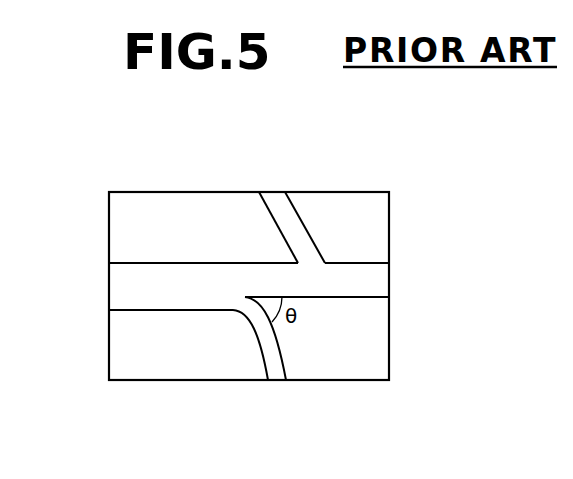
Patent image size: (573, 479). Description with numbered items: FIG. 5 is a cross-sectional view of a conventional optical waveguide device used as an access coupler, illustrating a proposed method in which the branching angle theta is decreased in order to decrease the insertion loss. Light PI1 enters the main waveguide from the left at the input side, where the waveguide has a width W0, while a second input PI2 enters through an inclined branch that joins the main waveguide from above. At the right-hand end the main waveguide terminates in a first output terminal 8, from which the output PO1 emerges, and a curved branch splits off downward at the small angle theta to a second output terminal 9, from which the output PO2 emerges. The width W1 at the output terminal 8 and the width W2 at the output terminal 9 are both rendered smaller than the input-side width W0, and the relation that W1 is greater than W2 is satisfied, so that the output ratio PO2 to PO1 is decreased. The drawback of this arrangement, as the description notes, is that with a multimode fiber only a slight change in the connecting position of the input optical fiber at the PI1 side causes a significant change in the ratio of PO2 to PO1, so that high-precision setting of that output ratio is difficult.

The output terminal 8 is at (390, 268).
The output terminal 9 is at (270, 381).
The input light PI1 is at (98, 288).
The input light PI2 is at (265, 180).
The output power PO1 is at (393, 281).
The output power PO2 is at (278, 387).
The input-side width W0 is at (169, 337).
The width at output terminal 8 W1 is at (362, 318).
The width at output terminal 9 W2 is at (303, 333).